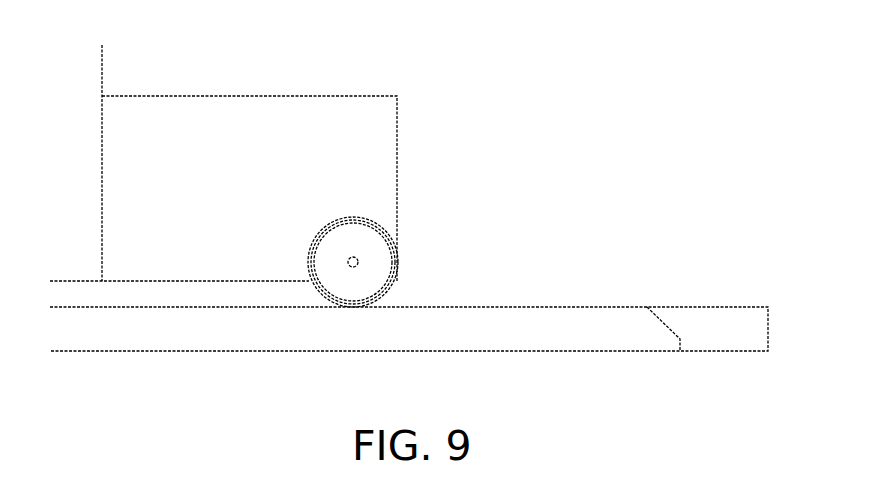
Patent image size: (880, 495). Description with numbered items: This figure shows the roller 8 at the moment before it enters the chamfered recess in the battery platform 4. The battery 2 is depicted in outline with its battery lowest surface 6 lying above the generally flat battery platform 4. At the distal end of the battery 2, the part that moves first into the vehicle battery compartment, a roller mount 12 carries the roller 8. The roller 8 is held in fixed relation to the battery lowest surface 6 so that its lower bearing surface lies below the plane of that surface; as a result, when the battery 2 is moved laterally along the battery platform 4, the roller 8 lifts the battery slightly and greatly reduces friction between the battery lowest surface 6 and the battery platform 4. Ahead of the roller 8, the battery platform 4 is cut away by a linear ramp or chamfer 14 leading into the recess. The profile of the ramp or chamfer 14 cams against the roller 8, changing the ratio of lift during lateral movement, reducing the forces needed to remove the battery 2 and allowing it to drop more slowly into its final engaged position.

The battery 2 is at (102, 78).
The battery platform 4 is at (166, 307).
The battery lowest surface 6 is at (188, 281).
The roller 8 is at (335, 300).
The roller mount 12 is at (370, 93).
The ramp or chamfer 14 is at (665, 322).